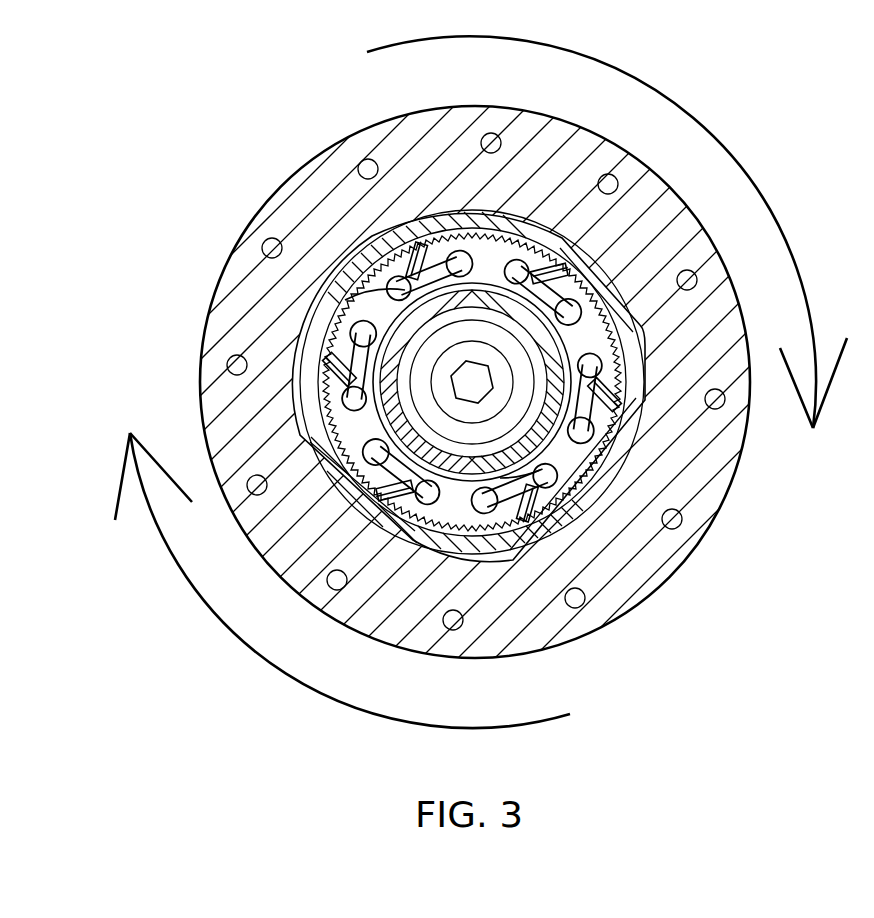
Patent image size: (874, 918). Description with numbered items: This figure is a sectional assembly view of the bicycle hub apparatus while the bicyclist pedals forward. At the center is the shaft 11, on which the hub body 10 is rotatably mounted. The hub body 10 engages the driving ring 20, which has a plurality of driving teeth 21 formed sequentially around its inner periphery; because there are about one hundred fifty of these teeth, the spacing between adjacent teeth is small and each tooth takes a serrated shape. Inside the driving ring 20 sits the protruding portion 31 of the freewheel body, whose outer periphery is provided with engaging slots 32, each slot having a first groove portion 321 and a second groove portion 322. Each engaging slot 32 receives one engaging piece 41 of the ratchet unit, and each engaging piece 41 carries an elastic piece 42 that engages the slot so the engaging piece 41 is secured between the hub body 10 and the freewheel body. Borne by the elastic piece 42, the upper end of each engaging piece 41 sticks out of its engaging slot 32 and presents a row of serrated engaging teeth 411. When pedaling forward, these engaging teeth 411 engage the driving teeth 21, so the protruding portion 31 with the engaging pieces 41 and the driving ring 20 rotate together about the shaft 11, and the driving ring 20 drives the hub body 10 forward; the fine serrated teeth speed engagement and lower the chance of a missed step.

The hub body 10 is at (255, 177).
The shaft 11 is at (478, 338).
The driving ring 20 is at (337, 278).
The driving teeth 21 is at (378, 260).
The protruding portion 31 is at (585, 482).
The engaging slots 32 is at (322, 375).
The first groove portion 321 is at (307, 445).
The second groove portion 322 is at (330, 323).
The engaging pieces 41 is at (307, 442).
The engaging teeth 411 is at (330, 362).
The elastic piece 42 is at (472, 382).